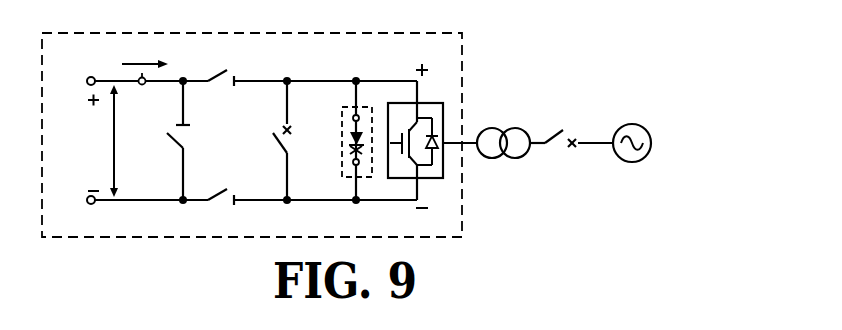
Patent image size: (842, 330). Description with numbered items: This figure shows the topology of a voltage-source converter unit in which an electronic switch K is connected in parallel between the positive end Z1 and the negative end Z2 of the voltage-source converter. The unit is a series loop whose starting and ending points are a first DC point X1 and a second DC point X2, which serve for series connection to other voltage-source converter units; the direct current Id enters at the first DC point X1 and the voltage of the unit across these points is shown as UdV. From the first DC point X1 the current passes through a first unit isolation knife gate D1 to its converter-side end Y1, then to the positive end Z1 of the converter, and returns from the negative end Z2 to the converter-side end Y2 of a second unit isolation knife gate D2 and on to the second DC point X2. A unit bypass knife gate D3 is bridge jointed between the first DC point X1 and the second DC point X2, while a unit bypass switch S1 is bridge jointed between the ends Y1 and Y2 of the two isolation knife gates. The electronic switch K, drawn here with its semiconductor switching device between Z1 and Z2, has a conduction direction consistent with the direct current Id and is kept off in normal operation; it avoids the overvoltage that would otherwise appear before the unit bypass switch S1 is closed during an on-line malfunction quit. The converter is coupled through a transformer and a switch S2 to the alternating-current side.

The first DC point X1 is at (93, 69).
The second DC point X2 is at (93, 214).
The end of first unit isolation knife gate close to the voltage-source converter Y1 is at (285, 68).
The end of second unit isolation knife gate close to the voltage-source converter Y2 is at (285, 221).
The positive end of the voltage-source converter Z1 is at (358, 68).
The negative end of the voltage-source converter Z2 is at (358, 221).
The first unit isolation knife gate D1 is at (220, 61).
The second unit isolation knife gate D2 is at (220, 182).
The unit bypass knife gate D3 is at (166, 140).
The unit bypass switch S1 is at (269, 140).
The AC-side switch S2 is at (575, 124).
The electronic switch K is at (347, 140).
The direct current Id is at (145, 53).
The DC voltage of the voltage-source converter unit UdV is at (112, 141).